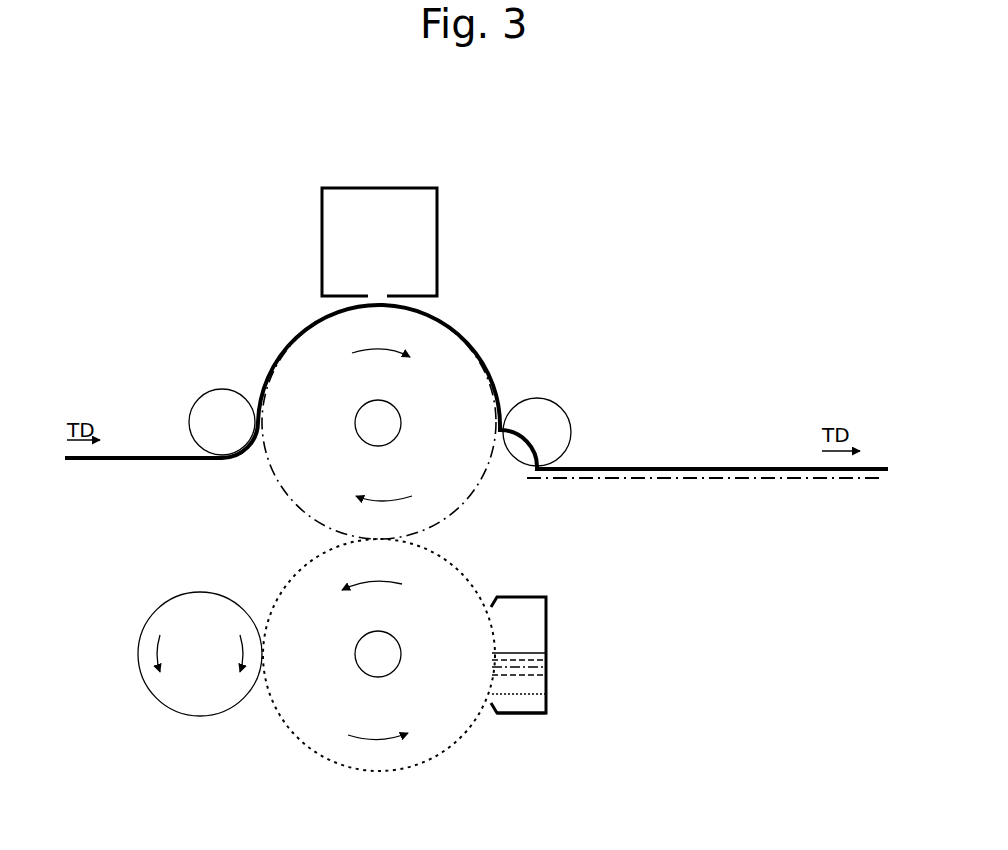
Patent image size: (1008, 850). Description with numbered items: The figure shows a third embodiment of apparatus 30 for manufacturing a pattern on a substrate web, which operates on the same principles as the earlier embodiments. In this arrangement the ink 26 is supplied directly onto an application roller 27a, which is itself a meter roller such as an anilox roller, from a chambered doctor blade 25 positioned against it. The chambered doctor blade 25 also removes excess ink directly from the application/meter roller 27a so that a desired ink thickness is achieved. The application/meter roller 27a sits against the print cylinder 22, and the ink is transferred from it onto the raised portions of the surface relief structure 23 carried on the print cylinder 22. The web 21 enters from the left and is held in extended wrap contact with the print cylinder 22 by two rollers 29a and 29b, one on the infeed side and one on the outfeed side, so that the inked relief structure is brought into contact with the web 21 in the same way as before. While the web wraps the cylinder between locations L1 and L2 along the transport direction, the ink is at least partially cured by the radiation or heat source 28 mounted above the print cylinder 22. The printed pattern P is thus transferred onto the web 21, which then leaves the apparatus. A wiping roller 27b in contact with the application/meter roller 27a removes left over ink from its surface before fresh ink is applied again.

The apparatus 30 is at (592, 182).
The web 21 is at (145, 462).
The print cylinder 22 is at (394, 485).
The surface relief structure 23 is at (472, 502).
The radiation or heat source 28 is at (341, 231).
The roller 29a is at (206, 414).
The roller 29b is at (535, 413).
The location L1 is at (260, 450).
The location L2 is at (505, 392).
The printed pattern P is at (653, 485).
The application roller 27a is at (402, 713).
The wiping roller 27b is at (173, 687).
The chambered doctor blade 25 is at (548, 628).
The ink 26 is at (527, 703).